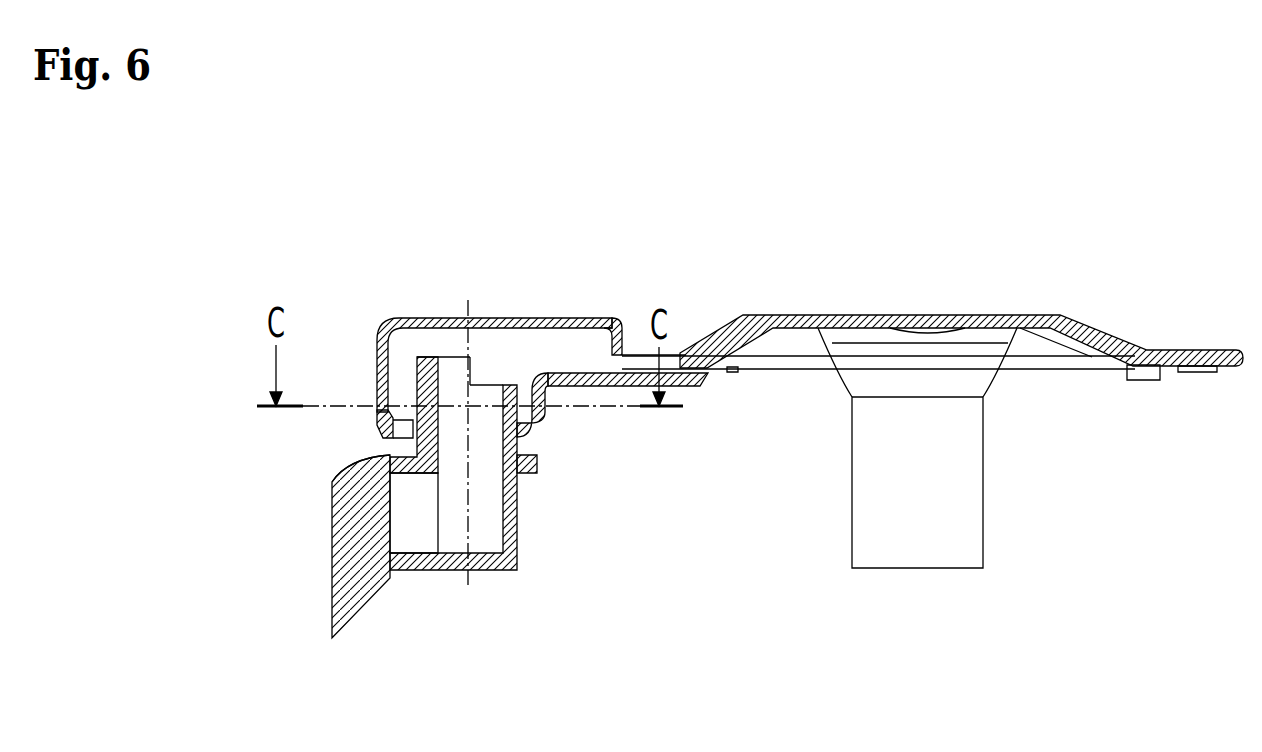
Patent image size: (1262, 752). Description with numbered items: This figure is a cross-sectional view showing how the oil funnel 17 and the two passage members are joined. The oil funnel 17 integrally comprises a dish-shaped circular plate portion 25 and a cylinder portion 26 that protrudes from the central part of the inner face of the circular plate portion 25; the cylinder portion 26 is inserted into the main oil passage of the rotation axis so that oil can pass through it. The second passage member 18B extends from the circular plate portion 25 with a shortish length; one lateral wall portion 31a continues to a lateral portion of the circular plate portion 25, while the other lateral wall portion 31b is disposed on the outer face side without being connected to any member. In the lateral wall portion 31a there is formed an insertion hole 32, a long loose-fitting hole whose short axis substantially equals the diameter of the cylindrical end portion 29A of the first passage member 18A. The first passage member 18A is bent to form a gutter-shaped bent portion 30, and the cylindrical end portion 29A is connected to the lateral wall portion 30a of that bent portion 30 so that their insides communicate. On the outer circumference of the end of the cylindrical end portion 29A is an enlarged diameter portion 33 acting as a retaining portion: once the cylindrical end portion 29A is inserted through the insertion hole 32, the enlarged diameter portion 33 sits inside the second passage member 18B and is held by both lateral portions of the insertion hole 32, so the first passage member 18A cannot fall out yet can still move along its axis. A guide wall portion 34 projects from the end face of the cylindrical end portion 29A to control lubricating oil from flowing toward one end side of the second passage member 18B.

The oil funnel 17 is at (1124, 318).
The first passage member 18A is at (350, 610).
The second passage member 18B is at (522, 390).
The circular plate portion 25 is at (1090, 315).
The cylinder portion 26 is at (967, 498).
The cylindrical end portion 29A is at (513, 447).
The bent portion 30 is at (497, 578).
The lateral wall portion 30a is at (388, 455).
The lateral wall portion 31a is at (612, 312).
The lateral wall portion 31b is at (440, 318).
The insertion hole 32 is at (410, 428).
The enlarged diameter portion 33 is at (550, 372).
The guide wall portion 34 is at (445, 372).